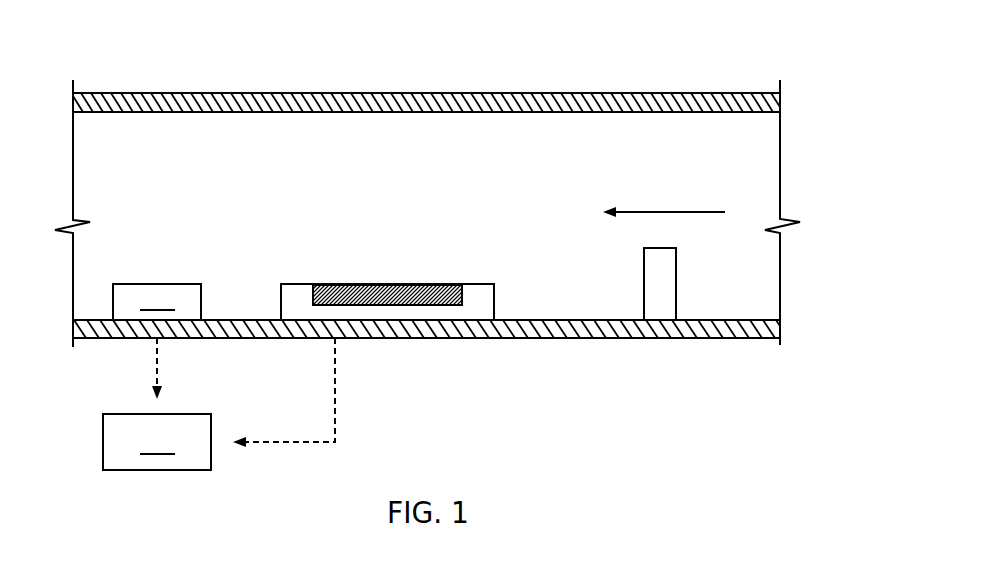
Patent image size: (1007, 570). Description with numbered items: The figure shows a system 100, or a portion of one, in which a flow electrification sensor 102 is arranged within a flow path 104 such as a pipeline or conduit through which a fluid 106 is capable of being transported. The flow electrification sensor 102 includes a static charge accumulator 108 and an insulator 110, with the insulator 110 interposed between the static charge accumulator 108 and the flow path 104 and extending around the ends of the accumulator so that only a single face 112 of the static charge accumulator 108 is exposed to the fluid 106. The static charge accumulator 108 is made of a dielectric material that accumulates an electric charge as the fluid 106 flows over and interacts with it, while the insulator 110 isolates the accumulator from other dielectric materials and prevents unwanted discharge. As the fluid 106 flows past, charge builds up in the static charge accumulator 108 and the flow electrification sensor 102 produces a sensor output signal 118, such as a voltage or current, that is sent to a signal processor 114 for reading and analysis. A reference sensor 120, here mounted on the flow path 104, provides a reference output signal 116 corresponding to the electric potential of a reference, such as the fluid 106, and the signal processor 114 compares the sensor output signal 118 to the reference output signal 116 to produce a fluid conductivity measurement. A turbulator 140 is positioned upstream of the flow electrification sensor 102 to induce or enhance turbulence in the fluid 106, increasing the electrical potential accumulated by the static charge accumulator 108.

The system 100 is at (759, 42).
The flow electrification sensor 102 is at (509, 254).
The flow path 104 is at (652, 335).
The fluid 106 is at (650, 211).
The static charge accumulator 108 is at (428, 285).
The insulator 110 is at (483, 305).
The single face 112 is at (330, 285).
The signal processor 114 is at (157, 442).
The reference output signal 116 is at (159, 362).
The sensor output signal 118 is at (337, 378).
The reference sensor 120 is at (157, 302).
The turbulator 140 is at (670, 283).